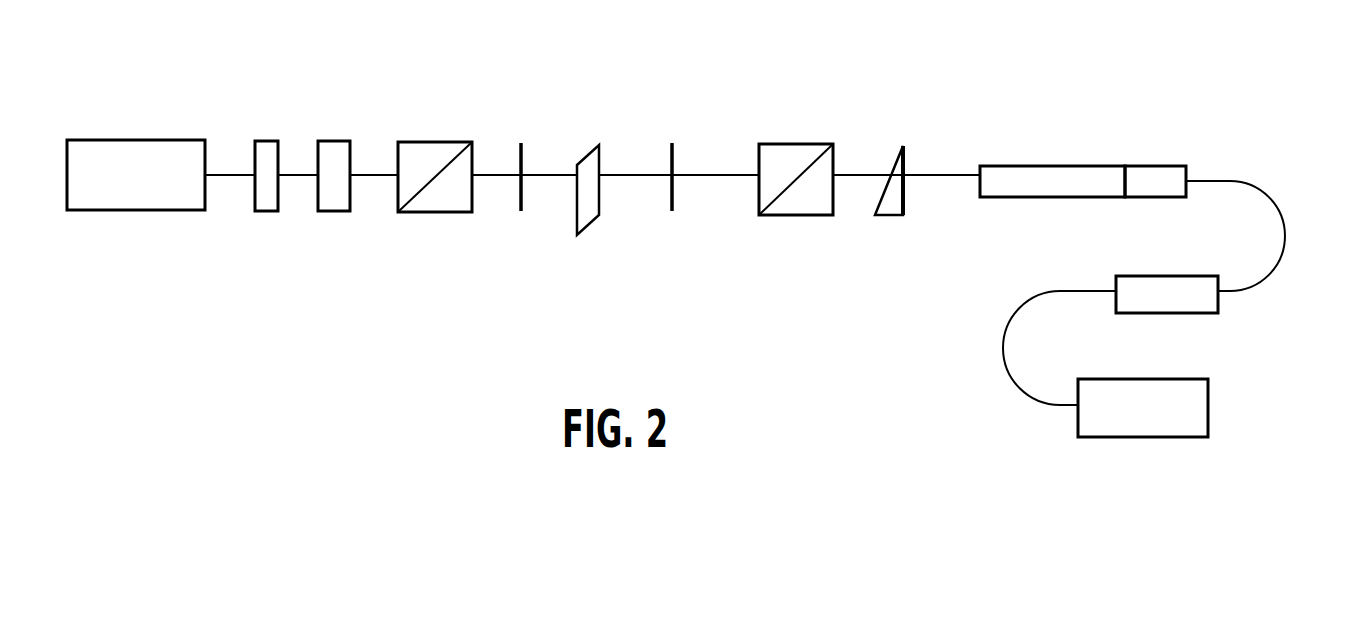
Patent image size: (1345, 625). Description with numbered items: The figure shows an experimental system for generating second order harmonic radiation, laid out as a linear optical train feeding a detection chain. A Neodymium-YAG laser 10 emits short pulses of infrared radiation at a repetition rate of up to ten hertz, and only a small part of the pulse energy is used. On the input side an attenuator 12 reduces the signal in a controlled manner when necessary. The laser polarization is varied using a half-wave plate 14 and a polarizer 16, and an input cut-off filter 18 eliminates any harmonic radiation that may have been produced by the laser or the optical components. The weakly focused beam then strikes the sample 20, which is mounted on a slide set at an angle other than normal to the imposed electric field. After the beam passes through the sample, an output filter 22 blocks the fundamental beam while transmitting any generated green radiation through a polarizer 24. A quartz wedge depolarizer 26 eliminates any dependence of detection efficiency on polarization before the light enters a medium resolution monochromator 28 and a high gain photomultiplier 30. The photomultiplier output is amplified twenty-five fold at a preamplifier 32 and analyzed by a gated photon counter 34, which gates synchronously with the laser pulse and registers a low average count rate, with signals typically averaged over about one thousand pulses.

The Neodymium-YAG laser 10 is at (158, 140).
The attenuator 12 is at (266, 141).
The lambda/2 plate 14 is at (336, 146).
The polarizer 16 is at (427, 152).
The input cut-off filter 18 is at (522, 158).
The sample 20 is at (585, 215).
The output filter 22 is at (668, 155).
The polarizer 24 is at (792, 145).
The quartz wedge depolarizer 26 is at (892, 170).
The medium resolution monochromator 28 is at (1031, 166).
The high gain photomultiplier 30 is at (1148, 166).
The preamplifier 32 is at (1187, 307).
The gated photon counter 34 is at (1200, 420).